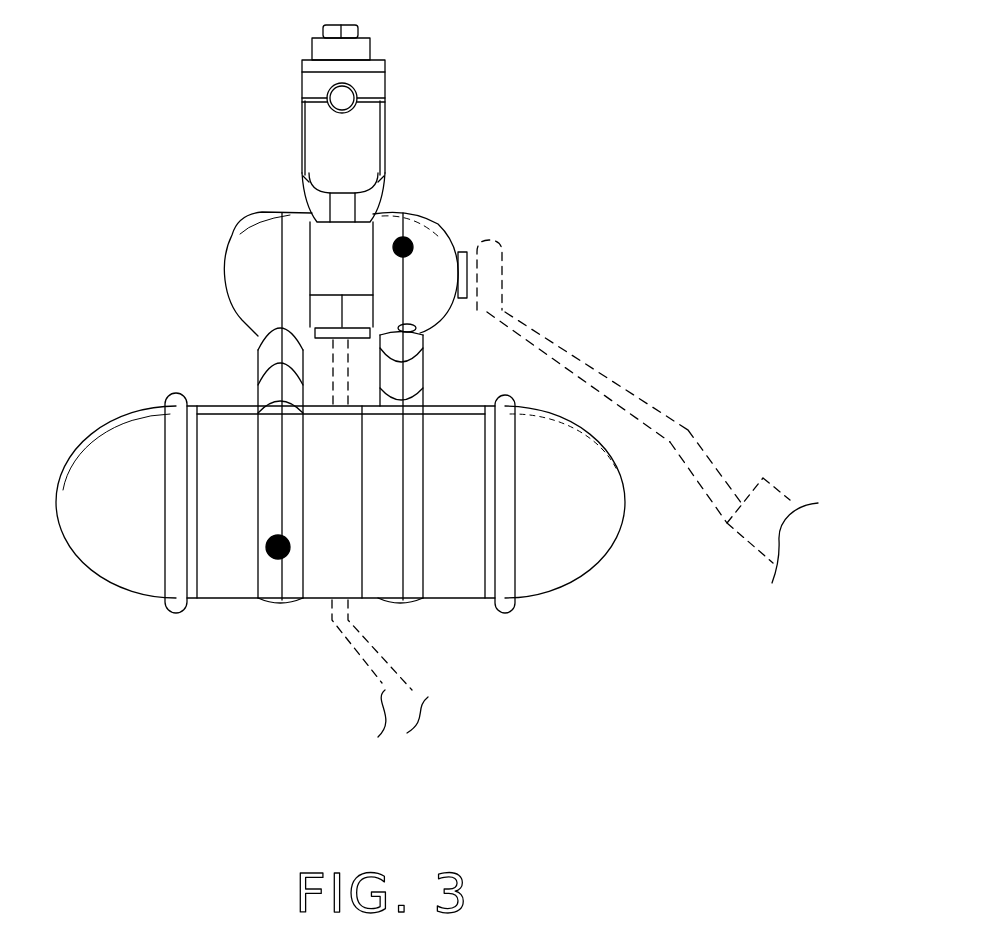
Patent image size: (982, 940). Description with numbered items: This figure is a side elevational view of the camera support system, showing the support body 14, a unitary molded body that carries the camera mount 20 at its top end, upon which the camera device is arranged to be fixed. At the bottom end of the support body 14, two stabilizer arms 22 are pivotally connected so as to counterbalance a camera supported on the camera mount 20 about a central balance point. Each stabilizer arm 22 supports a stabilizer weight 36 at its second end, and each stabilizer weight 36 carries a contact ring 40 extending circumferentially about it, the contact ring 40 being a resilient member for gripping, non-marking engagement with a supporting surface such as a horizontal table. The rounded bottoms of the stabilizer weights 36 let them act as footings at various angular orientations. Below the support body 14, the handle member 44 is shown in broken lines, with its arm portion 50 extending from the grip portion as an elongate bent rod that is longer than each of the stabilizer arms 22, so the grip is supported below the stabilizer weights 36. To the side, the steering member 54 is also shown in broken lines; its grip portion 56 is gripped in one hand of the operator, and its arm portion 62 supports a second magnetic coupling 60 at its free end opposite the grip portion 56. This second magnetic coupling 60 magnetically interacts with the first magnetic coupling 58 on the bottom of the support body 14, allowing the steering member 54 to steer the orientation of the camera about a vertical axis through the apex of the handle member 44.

The support body 14 is at (352, 253).
The camera mount 20 is at (411, 103).
The stabilizer arms 22 is at (272, 375).
The stabilizer weight 36 is at (133, 557).
The contact ring 40 is at (173, 613).
The handle member 44 is at (347, 668).
The arm portion 50 is at (384, 729).
The steering member 54 is at (675, 440).
The grip portion 56 is at (782, 495).
The first magnetic coupling 58 is at (467, 268).
The second magnetic coupling 60 is at (502, 283).
The arm portion 62 is at (597, 373).